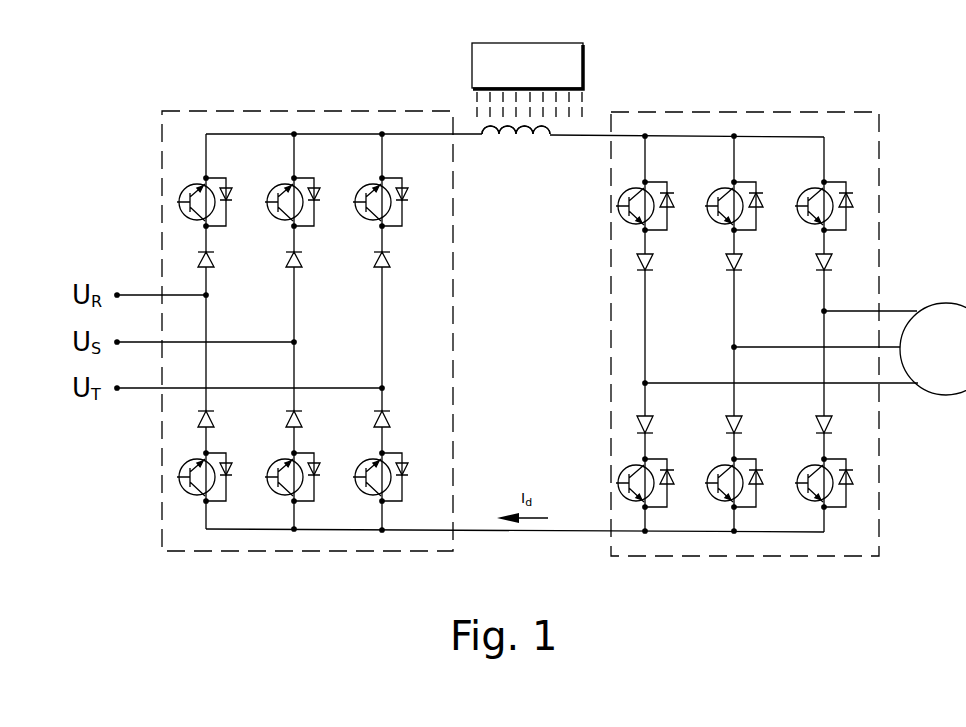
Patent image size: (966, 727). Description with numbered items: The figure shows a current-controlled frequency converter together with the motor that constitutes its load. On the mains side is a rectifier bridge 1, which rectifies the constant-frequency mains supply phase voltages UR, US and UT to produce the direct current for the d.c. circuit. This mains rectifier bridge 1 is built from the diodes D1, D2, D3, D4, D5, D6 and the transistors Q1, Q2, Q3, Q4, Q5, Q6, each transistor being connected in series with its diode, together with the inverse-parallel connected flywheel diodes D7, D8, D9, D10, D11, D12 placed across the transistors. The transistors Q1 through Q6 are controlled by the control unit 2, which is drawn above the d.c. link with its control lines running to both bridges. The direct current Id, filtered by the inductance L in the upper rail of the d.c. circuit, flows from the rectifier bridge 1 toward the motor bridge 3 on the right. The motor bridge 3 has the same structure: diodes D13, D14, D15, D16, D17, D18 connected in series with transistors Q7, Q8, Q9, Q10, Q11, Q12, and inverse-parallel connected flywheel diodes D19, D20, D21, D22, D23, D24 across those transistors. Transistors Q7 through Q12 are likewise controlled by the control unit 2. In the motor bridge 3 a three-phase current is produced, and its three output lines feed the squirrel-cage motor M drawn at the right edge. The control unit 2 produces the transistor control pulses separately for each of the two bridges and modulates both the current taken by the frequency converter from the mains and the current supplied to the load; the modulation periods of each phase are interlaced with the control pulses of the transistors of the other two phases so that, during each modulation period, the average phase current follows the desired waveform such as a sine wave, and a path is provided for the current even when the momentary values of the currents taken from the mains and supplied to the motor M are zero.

The rectifier bridge 1 is at (162, 137).
The control unit 2 is at (583, 83).
The motor bridge 3 is at (880, 128).
The inductance L is at (516, 147).
The squirrel-cage motor M is at (805, 349).
The transistor Q1 is at (196, 187).
The transistor Q2 is at (191, 465).
The transistor Q3 is at (284, 187).
The transistor Q4 is at (279, 465).
The transistor Q5 is at (372, 187).
The transistor Q6 is at (367, 465).
The transistor Q7 is at (634, 192).
The transistor Q8 is at (633, 470).
The transistor Q9 is at (723, 192).
The transistor Q10 is at (719, 470).
The transistor Q11 is at (812, 192).
The transistor Q12 is at (809, 470).
The diode D1 is at (222, 268).
The diode D2 is at (221, 412).
The diode D3 is at (310, 268).
The diode D4 is at (309, 412).
The diode D5 is at (398, 268).
The diode D6 is at (397, 412).
The flywheel diode D7 is at (228, 203).
The flywheel diode D8 is at (230, 481).
The flywheel diode D9 is at (316, 203).
The flywheel diode D10 is at (322, 481).
The flywheel diode D11 is at (408, 203).
The flywheel diode D12 is at (410, 481).
The diode D13 is at (662, 272).
The diode D14 is at (663, 417).
The diode D15 is at (751, 272).
The diode D16 is at (752, 417).
The diode D17 is at (841, 272).
The diode D18 is at (842, 417).
The flywheel diode D19 is at (672, 207).
The flywheel diode D20 is at (673, 487).
The flywheel diode D21 is at (761, 207).
The flywheel diode D22 is at (762, 487).
The flywheel diode D23 is at (851, 207).
The flywheel diode D24 is at (845, 496).